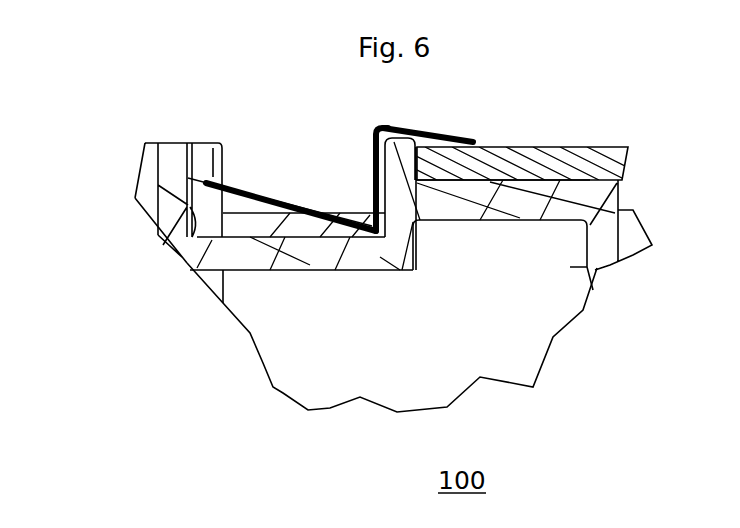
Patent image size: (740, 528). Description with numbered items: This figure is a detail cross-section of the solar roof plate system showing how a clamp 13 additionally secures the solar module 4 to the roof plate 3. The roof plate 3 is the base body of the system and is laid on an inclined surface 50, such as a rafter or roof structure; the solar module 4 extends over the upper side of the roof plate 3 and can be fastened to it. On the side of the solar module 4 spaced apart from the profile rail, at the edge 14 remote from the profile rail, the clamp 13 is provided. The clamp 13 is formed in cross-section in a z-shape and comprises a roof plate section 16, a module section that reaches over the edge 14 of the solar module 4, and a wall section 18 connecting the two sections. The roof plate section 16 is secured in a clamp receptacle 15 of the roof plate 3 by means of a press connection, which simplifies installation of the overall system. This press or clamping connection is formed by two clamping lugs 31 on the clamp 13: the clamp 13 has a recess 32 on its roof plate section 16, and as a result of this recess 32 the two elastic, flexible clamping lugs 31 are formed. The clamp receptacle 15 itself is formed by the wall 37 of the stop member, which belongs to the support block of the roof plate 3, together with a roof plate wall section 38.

The roof plate 3 is at (345, 253).
The solar module 4 is at (596, 160).
The clamp 13 is at (379, 113).
The edge (remote from the profile rail) 14 is at (422, 142).
The clamp receptacle 15 is at (247, 224).
The roof plate section 16 is at (300, 207).
The wall section 18 is at (368, 164).
The clamping lug 31 is at (205, 143).
The recess 32 is at (245, 195).
The wall 37 is at (402, 178).
The roof plate wall section 38 is at (189, 255).
The inclined surface 50 is at (404, 396).